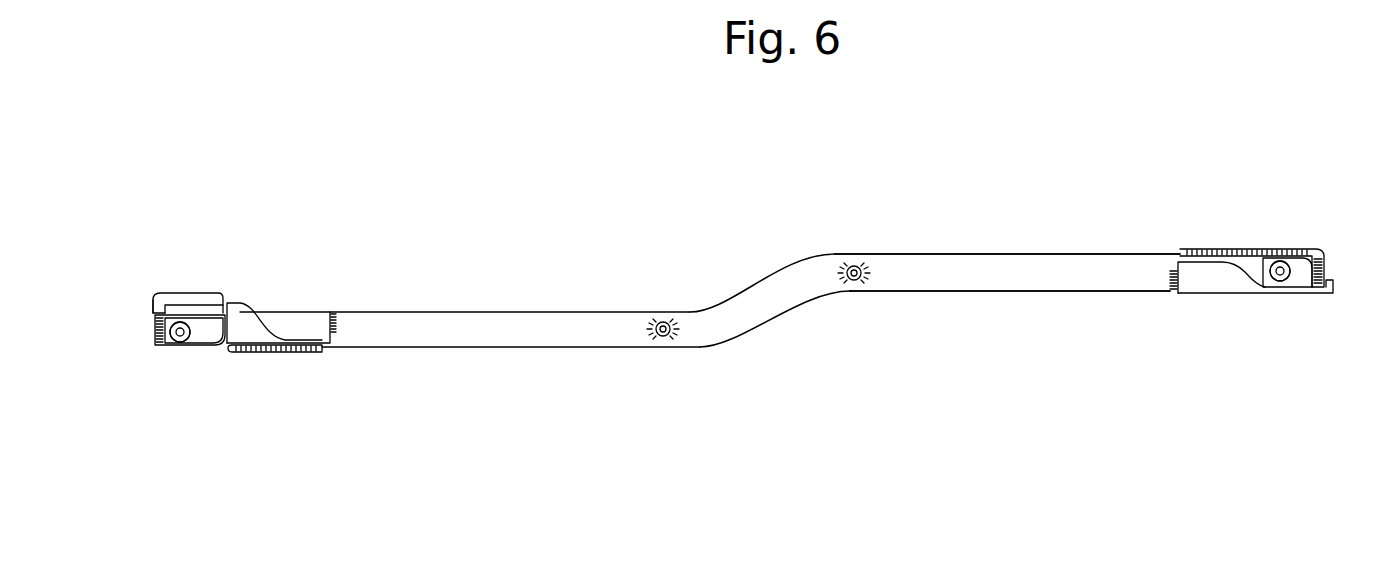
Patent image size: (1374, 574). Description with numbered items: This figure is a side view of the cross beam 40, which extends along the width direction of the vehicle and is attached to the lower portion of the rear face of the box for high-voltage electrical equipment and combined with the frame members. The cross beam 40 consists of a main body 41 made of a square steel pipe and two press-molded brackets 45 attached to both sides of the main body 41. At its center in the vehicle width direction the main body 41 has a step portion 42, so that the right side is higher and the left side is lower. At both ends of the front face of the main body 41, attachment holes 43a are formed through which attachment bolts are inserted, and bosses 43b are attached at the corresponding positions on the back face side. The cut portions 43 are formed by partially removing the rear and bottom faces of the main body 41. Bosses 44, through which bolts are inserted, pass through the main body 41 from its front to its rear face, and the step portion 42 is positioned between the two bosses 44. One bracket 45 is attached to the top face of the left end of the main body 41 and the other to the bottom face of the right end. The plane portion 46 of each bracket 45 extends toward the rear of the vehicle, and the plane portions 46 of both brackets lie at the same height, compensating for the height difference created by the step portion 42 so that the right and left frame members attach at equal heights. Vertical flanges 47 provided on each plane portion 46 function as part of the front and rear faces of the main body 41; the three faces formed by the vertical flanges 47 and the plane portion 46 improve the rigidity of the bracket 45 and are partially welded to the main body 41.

The cross beam 40 is at (1013, 218).
The main body 41 is at (919, 240).
The step portion 42 is at (760, 278).
The cut portions 43 is at (212, 348).
The attachment holes 43a is at (178, 340).
The bosses 43b is at (190, 345).
The bosses 44 is at (663, 322).
The brackets 45 is at (146, 293).
The plane portion 46 is at (186, 294).
The vertical flanges 47 is at (292, 320).